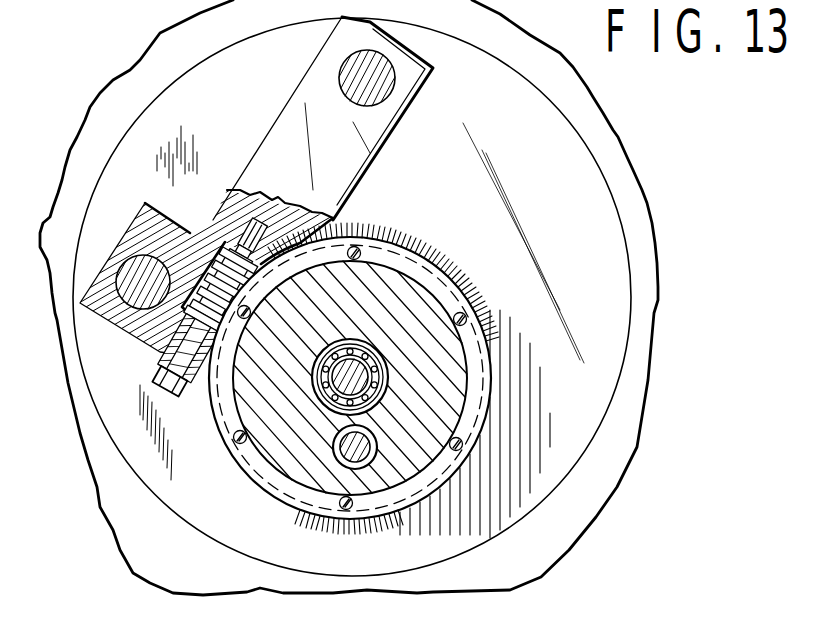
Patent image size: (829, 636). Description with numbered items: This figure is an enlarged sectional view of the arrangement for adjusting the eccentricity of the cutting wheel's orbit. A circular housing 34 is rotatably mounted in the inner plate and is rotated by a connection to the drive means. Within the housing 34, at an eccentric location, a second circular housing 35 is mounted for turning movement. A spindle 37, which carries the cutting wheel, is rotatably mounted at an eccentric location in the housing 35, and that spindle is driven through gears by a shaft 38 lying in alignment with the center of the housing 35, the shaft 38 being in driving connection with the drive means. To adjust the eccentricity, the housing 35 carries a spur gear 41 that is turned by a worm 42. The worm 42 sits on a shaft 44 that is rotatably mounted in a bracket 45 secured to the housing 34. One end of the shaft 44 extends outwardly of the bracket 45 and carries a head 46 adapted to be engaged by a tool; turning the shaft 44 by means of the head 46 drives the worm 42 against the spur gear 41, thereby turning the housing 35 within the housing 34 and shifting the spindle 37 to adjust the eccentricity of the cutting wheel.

The circular housing 34 is at (568, 182).
The circular housing 35 is at (236, 483).
The spindle 37 is at (362, 445).
The shaft 38 is at (357, 373).
The spur gear 41 is at (283, 232).
The worm 42 is at (212, 230).
The shaft 44 is at (220, 364).
The bracket 45 is at (293, 131).
The head 46 is at (154, 372).